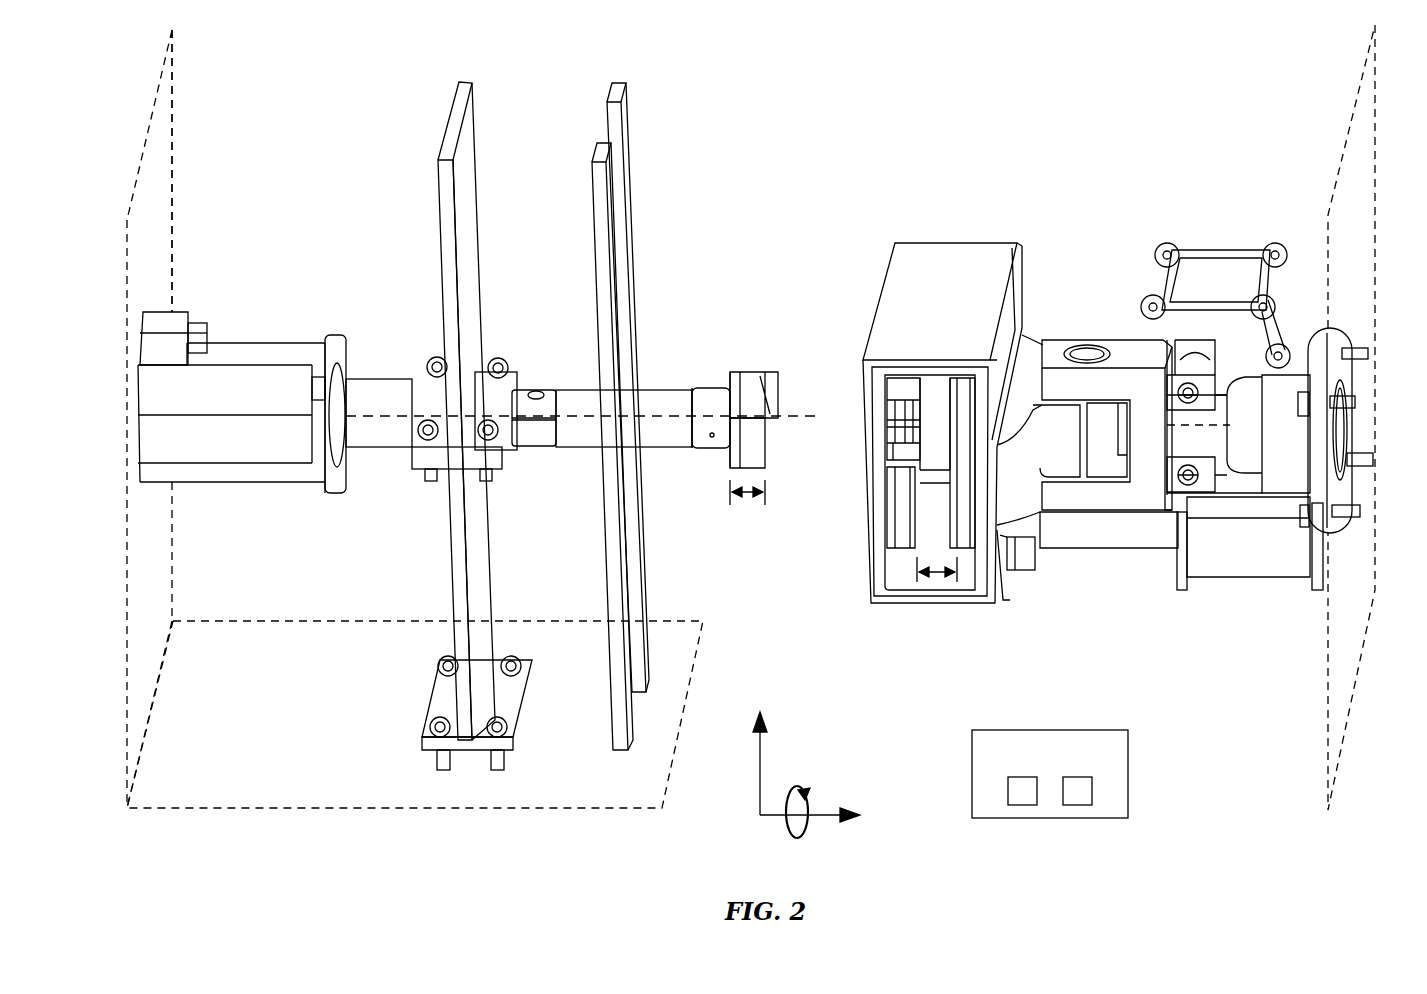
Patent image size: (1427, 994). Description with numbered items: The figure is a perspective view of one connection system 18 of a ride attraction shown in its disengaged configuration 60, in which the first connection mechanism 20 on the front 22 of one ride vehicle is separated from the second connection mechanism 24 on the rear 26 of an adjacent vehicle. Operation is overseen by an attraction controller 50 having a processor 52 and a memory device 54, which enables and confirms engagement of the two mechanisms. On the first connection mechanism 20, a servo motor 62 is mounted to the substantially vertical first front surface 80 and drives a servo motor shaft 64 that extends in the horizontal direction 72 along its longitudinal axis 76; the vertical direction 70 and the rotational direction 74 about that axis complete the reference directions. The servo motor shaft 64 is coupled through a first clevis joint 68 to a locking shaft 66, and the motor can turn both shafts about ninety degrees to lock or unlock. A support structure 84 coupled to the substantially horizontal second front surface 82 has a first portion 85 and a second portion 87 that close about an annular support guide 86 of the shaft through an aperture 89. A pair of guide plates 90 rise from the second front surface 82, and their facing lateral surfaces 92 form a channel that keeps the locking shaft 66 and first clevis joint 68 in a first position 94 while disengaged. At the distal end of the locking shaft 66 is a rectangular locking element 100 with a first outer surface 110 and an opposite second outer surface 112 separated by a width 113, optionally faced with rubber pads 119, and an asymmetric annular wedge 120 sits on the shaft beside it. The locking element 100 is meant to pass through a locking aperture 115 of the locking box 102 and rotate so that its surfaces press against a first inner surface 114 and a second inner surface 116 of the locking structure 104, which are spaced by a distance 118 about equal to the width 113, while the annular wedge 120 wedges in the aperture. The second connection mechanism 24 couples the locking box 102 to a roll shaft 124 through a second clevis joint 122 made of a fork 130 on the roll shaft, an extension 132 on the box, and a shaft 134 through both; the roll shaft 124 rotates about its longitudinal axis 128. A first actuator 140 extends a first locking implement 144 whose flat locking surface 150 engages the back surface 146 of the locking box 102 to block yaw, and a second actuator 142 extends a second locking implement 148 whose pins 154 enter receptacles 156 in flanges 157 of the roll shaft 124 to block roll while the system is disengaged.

The connection system 18 is at (828, 56).
The first connection mechanism 20 is at (303, 66).
The front 22 is at (174, 82).
The second connection mechanism 24 is at (1189, 109).
The rear 26 is at (1352, 115).
The attraction controller 50 is at (1050, 772).
The processor 52 is at (1020, 805).
The memory device 54 is at (1078, 805).
The disengaged configuration 60 is at (886, 72).
The servo motor 62 is at (240, 345).
The servo motor shaft 64 is at (370, 447).
The locking shaft 66 is at (655, 450).
The first clevis joint 68 is at (546, 372).
The vertical direction 70 is at (758, 765).
The horizontal direction 72 is at (830, 818).
The rotational direction 74 is at (800, 790).
The longitudinal axis 76 is at (358, 400).
The first front surface 80 is at (172, 170).
The second front surface 82 is at (265, 640).
The support structure 84 is at (448, 120).
The first portion 85 is at (464, 165).
The annular support guide 86 is at (478, 368).
The second portion 87 is at (453, 590).
The aperture 89 is at (548, 376).
The guide plates 90 is at (618, 401).
The lateral surface 92 is at (608, 92).
The first position 94 is at (545, 455).
The locking element 100 is at (780, 390).
The locking box 102 is at (922, 429).
The locking structure 104 is at (898, 566).
The first outer surface 110 is at (775, 400).
The second outer surface 112 is at (730, 382).
The width 113 is at (748, 500).
The first inner surface 114 is at (940, 420).
The locking aperture 115 is at (900, 410).
The second inner surface 116 is at (925, 415).
The distance 118 is at (935, 590).
The rubber pads 119 is at (740, 372).
The annular wedge 120 is at (700, 388).
The second clevis joint 122 is at (1038, 309).
The roll shaft 124 is at (1205, 440).
The longitudinal axis 128 is at (1220, 430).
The fork 130 is at (1143, 340).
The extension 132 is at (1050, 470).
The shaft 134 is at (1085, 345).
The first actuator 140 is at (1200, 590).
The second actuator 142 is at (1232, 285).
The first locking implement 144 is at (1030, 572).
The back surface 146 is at (1003, 580).
The second locking implement 148 is at (1240, 290).
The locking surface 150 is at (1002, 560).
The pins 154 is at (1268, 310).
The receptacles 156 is at (1230, 395).
The flanges 157 is at (1185, 390).